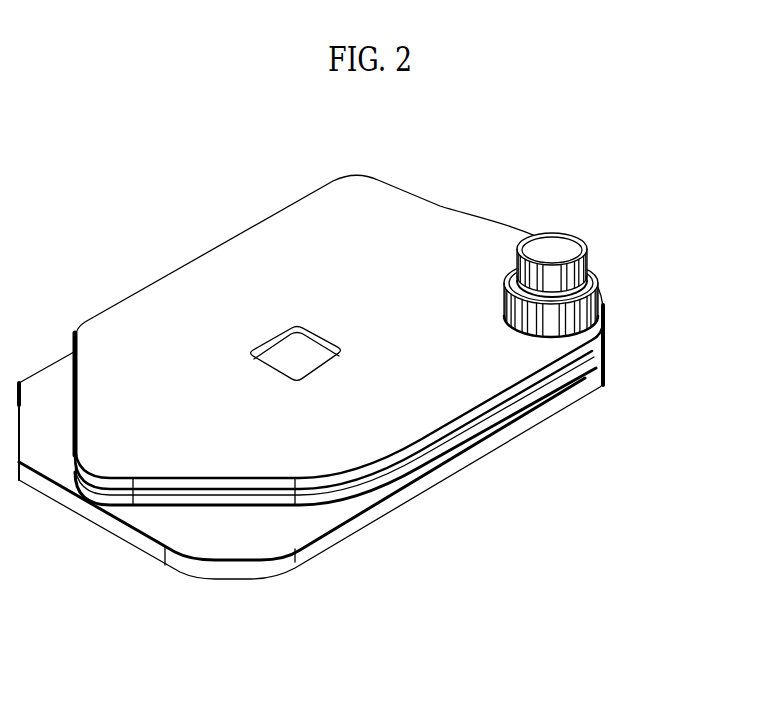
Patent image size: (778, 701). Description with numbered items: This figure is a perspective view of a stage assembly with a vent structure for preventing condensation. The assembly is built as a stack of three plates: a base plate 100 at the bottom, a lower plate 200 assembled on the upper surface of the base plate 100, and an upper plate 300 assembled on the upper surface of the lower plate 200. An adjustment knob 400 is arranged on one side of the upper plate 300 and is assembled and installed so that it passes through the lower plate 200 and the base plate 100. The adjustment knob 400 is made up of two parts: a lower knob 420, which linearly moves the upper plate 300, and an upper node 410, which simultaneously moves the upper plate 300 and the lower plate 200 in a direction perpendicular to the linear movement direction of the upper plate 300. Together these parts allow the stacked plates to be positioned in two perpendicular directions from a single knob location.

The base plate 100 is at (252, 581).
The lower plate 200 is at (193, 512).
The upper plate 300 is at (122, 323).
The adjustment knob 400 is at (628, 253).
The upper node 410 is at (682, 278).
The lower knob 420 is at (605, 306).